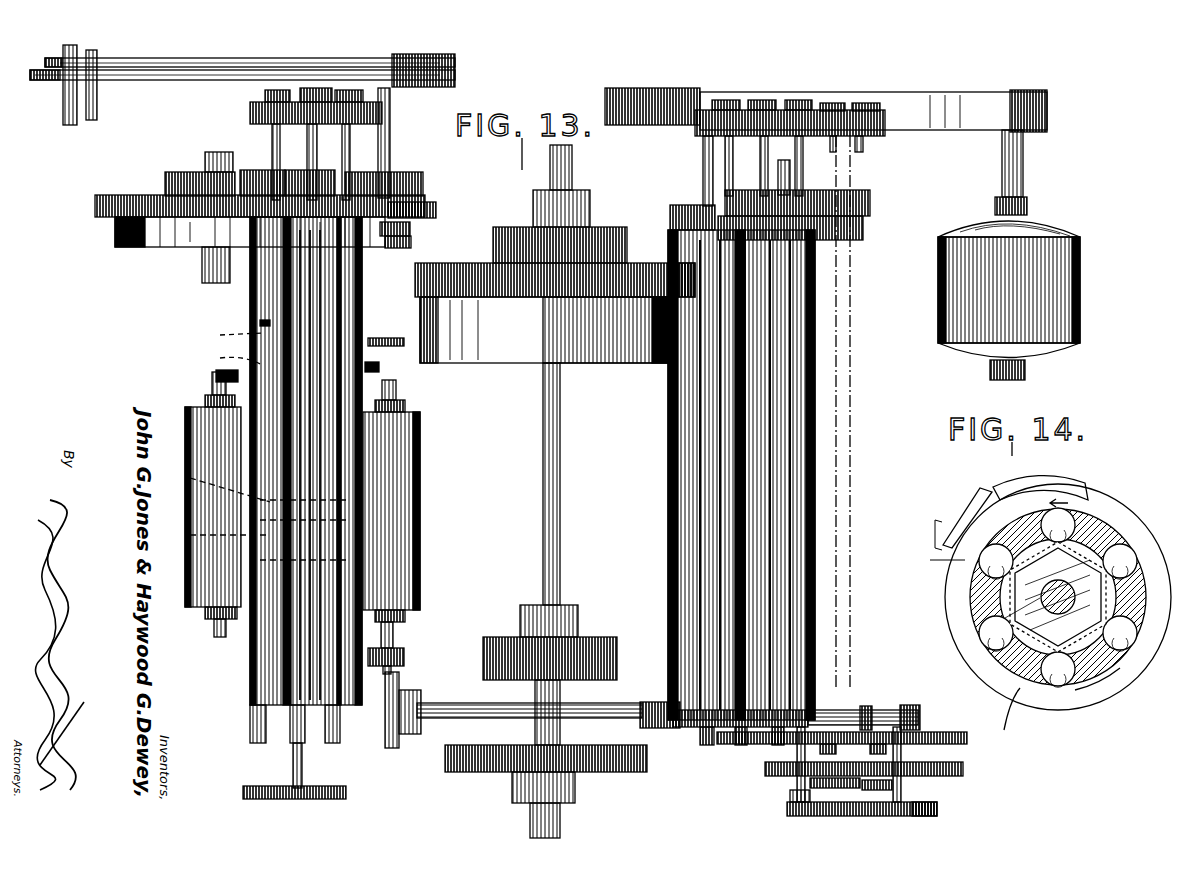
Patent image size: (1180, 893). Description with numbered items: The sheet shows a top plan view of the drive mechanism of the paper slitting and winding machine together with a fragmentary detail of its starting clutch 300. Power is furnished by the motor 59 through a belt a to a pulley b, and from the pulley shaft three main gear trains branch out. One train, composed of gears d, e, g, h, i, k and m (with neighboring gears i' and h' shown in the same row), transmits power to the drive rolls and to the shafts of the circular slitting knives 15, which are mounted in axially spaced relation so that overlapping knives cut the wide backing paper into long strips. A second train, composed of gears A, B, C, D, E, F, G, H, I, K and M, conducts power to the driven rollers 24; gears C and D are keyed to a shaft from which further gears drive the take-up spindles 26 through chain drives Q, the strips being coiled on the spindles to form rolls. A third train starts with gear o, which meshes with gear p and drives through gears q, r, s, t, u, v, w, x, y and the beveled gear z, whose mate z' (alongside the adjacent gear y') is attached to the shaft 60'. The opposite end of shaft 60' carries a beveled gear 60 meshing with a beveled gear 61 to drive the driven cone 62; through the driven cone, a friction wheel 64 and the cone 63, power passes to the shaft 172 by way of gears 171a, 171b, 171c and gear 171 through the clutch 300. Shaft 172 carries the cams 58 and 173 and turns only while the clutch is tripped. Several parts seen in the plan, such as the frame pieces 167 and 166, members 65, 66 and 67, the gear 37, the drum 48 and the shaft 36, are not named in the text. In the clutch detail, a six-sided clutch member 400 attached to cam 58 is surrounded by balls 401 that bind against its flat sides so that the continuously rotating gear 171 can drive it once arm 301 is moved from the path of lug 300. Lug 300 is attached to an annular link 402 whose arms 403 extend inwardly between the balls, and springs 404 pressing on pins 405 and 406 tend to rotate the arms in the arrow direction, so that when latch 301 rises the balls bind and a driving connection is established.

In FIG. 13, the take-up spindle 26 is at (68, 105).
In FIG. 13, the chain drive Q is at (195, 65).
In FIG. 13, the gear M is at (250, 110).
In FIG. 13, the gear K is at (390, 115).
In FIG. 13, the gear F is at (190, 172).
In FIG. 13, the gear G is at (262, 172).
In FIG. 13, the gear H is at (302, 172).
In FIG. 13, the gear I is at (312, 128).
In FIG. 13, the gear E is at (150, 196).
In FIG. 13, the gear D is at (436, 214).
In FIG. 13, the gear C is at (440, 238).
In FIG. 13, the cam 173 is at (436, 238).
In FIG. 13, the frame block 167 is at (130, 240).
In FIG. 13, the post 166 is at (212, 275).
In FIG. 13, the power driven shaft 172 is at (252, 303).
In FIG. 14, the power driven shaft 172 is at (1045, 597).
In FIG. 13, the cam member 58 is at (260, 323).
In FIG. 13, the gear 171c is at (220, 335).
In FIG. 13, the gear 171b is at (220, 358).
In FIG. 13, the gear 171a is at (216, 376).
In FIG. 13, the gear 171 is at (372, 368).
In FIG. 13, the starting clutch 300 is at (391, 349).
In FIG. 14, the starting clutch 300 is at (1075, 485).
In FIG. 13, the driven roller 24 is at (330, 383).
In FIG. 13, the cone 63 is at (210, 562).
In FIG. 13, the friction wheel 64 is at (210, 483).
In FIG. 13, the cylinder pin 65 is at (210, 537).
In FIG. 13, the driven cone 62 is at (400, 553).
In FIG. 13, the beveled gear 61 is at (398, 650).
In FIG. 13, the beveled gear 60 is at (402, 723).
In FIG. 13, the shaft 60' is at (529, 696).
In FIG. 13, the gear o is at (655, 703).
In FIG. 13, the rod 66 is at (302, 767).
In FIG. 13, the plate 67 is at (282, 786).
In FIG. 13, the gear 37 is at (528, 250).
In FIG. 13, the gear B is at (625, 275).
In FIG. 13, the gear A is at (680, 265).
In FIG. 13, the drum 48 is at (528, 330).
In FIG. 13, the shaft 36 is at (560, 408).
In FIG. 13, the pulley b is at (648, 90).
In FIG. 13, the belt a is at (944, 110).
In FIG. 13, the gear m is at (880, 122).
In FIG. 13, the gear i' is at (721, 136).
In FIG. 13, the gear h' is at (750, 131).
In FIG. 13, the gear i is at (786, 131).
In FIG. 13, the gear k is at (832, 103).
In FIG. 13, the gear h is at (769, 166).
In FIG. 13, the gear d is at (672, 212).
In FIG. 13, the gear g is at (870, 198).
In FIG. 13, the gear e is at (862, 228).
In FIG. 13, the circular knife 15 is at (712, 432).
In FIG. 13, the motor 59 is at (1040, 250).
In FIG. 13, the gear p is at (700, 730).
In FIG. 13, the gear q is at (735, 740).
In FIG. 13, the gear r is at (772, 740).
In FIG. 13, the gear v is at (797, 760).
In FIG. 13, the gear s is at (855, 712).
In FIG. 13, the beveled gear z is at (875, 703).
In FIG. 13, the beveled gear z' is at (920, 703).
In FIG. 13, the gear t is at (965, 735).
In FIG. 13, the gear u is at (963, 768).
In FIG. 13, the gear x is at (850, 816).
In FIG. 13, the gear y' is at (901, 764).
In FIG. 13, the gear w is at (800, 816).
In FIG. 13, the gear y is at (924, 823).
In FIG. 14, the arm 301 is at (966, 500).
In FIG. 14, the annular link 402 is at (925, 546).
In FIG. 14, the arm 403 is at (1100, 545).
In FIG. 14, the spring 404 is at (1125, 645).
In FIG. 14, the six-sided clutch member 400 is at (1035, 618).
In FIG. 14, the ball 401 is at (990, 632).
In FIG. 14, the pin 406 is at (1095, 680).
In FIG. 14, the pin 405 is at (1058, 708).